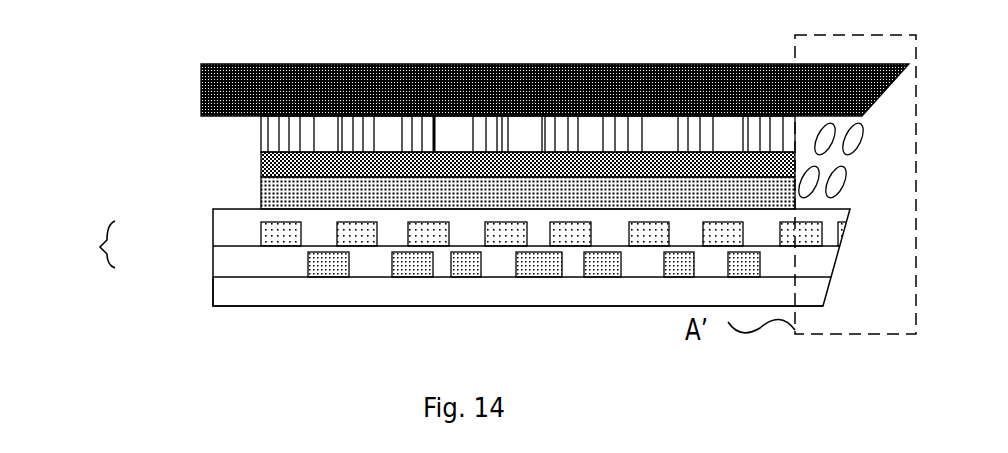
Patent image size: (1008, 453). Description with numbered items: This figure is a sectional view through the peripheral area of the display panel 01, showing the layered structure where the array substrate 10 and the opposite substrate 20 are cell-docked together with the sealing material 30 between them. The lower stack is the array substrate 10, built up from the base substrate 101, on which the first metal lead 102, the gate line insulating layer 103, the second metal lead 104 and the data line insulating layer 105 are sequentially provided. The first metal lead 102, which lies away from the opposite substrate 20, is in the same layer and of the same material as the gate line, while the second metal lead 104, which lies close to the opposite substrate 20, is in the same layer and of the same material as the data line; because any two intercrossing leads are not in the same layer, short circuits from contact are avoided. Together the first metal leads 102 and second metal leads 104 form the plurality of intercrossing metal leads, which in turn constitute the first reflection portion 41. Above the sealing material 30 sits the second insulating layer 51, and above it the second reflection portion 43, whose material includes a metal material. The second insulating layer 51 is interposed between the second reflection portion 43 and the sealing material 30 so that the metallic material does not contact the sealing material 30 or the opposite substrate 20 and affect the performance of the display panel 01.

The display panel 01 is at (130, 42).
The opposite substrate 20 is at (703, 95).
The second reflection portion 43 is at (260, 140).
The second insulating layer 51 is at (308, 168).
The sealing material 30 is at (275, 202).
The array substrate 10 is at (857, 207).
The base substrate 101 is at (233, 302).
The first metal lead 102 is at (320, 268).
The gate line insulating layer 103 is at (576, 272).
The second metal lead 104 is at (278, 235).
The data line insulating layer 105 is at (389, 223).
The first reflection portion 41 is at (61, 244).